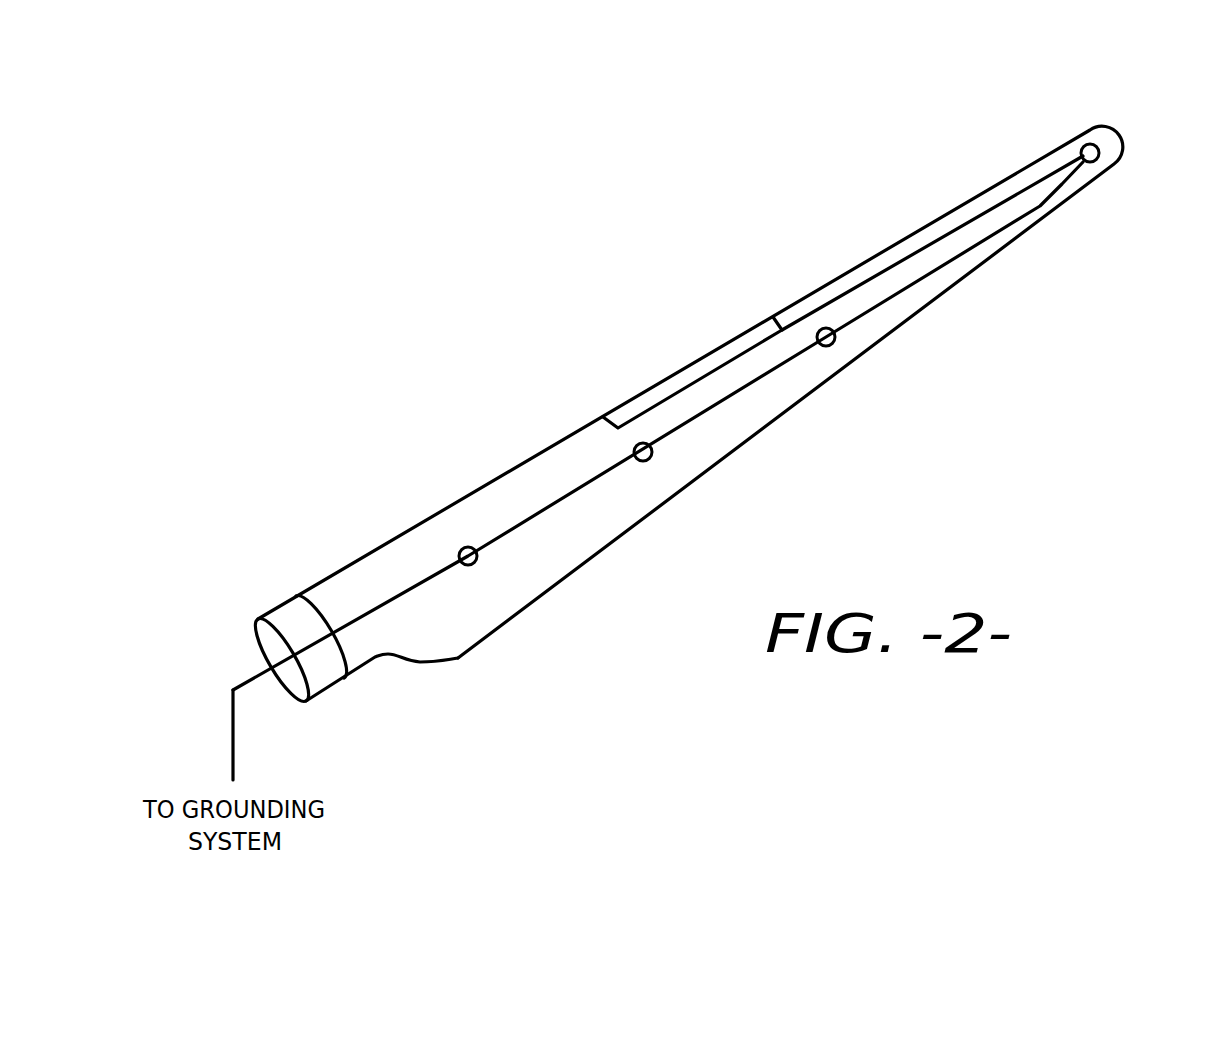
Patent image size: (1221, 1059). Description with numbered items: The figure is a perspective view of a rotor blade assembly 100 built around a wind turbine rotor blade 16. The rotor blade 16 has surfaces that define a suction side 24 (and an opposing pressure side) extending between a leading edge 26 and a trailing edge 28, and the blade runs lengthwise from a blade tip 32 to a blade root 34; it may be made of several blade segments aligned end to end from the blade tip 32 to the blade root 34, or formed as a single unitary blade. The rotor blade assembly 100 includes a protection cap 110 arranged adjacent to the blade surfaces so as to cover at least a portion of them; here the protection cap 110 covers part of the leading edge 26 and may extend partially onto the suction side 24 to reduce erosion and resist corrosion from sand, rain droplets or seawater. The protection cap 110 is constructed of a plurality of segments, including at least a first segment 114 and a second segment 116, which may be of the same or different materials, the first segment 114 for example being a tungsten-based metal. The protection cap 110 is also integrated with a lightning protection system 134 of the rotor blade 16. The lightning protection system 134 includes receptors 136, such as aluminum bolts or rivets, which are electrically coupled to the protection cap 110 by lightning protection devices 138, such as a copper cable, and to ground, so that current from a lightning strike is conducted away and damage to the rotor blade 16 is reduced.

The rotor blade 16 is at (573, 429).
The suction side 24 is at (511, 491).
The leading edge 26 is at (418, 523).
The trailing edge 28 is at (722, 466).
The blade tip 32 is at (1118, 147).
The blade root 34 is at (288, 622).
The rotor blade assembly 100 is at (460, 295).
The protection cap 110 is at (838, 277).
The first segment 114 is at (940, 232).
The second segment 116 is at (693, 375).
The lightning protection system 134 is at (572, 516).
The receptor 136 is at (468, 565).
The lightning protection device 138 is at (750, 392).